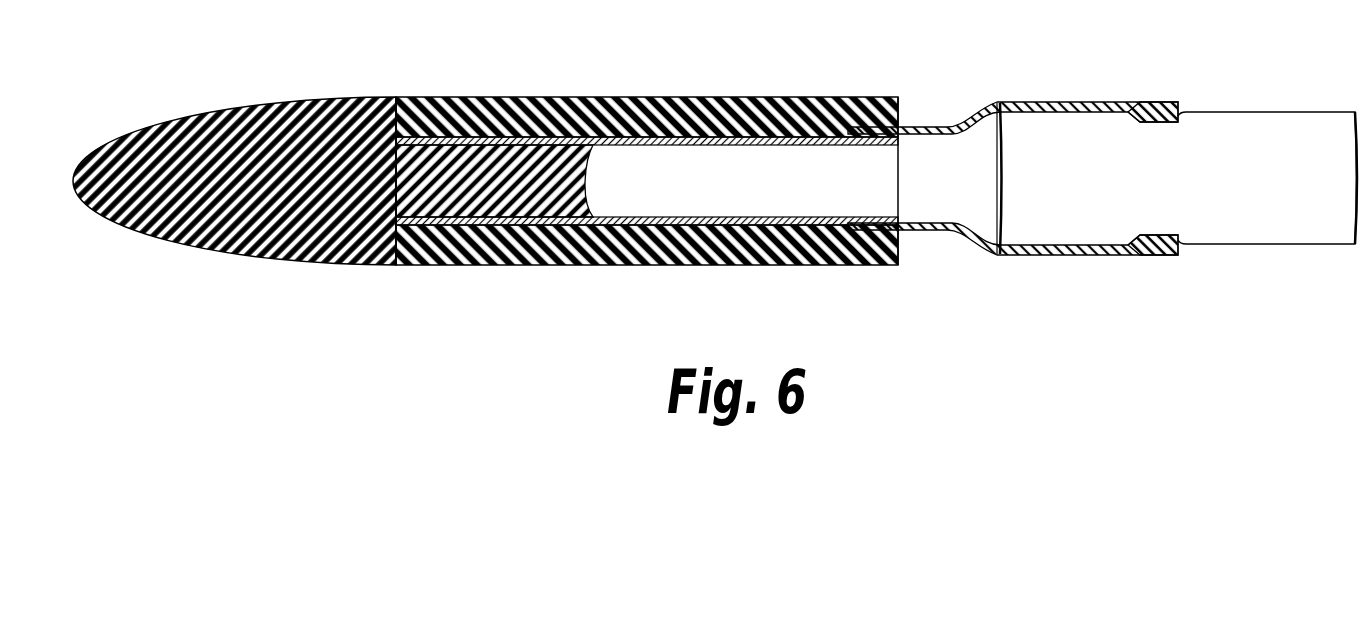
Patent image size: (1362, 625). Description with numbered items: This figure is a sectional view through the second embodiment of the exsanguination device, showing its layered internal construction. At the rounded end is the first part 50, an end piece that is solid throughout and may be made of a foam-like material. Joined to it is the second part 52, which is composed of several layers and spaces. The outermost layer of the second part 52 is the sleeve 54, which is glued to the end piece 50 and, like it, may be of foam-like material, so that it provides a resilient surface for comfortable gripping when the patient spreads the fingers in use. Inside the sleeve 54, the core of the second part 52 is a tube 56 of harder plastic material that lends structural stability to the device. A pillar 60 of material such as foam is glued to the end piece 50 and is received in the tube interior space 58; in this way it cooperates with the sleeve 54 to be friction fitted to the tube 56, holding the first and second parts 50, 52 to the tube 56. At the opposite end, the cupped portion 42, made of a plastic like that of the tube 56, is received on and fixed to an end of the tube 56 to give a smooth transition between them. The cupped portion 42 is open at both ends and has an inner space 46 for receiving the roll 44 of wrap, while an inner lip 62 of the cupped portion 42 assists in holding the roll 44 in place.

The cupped portion 42 is at (1087, 179).
The roll of wrap 44 is at (1247, 205).
The inner space 46 is at (950, 167).
The first part 50 is at (220, 238).
The second part 52 is at (645, 183).
The sleeve 54 is at (725, 97).
The tube 56 is at (820, 134).
The tube interior space 58 is at (593, 170).
The pillar 60 is at (492, 180).
The inner lip 62 is at (1157, 245).